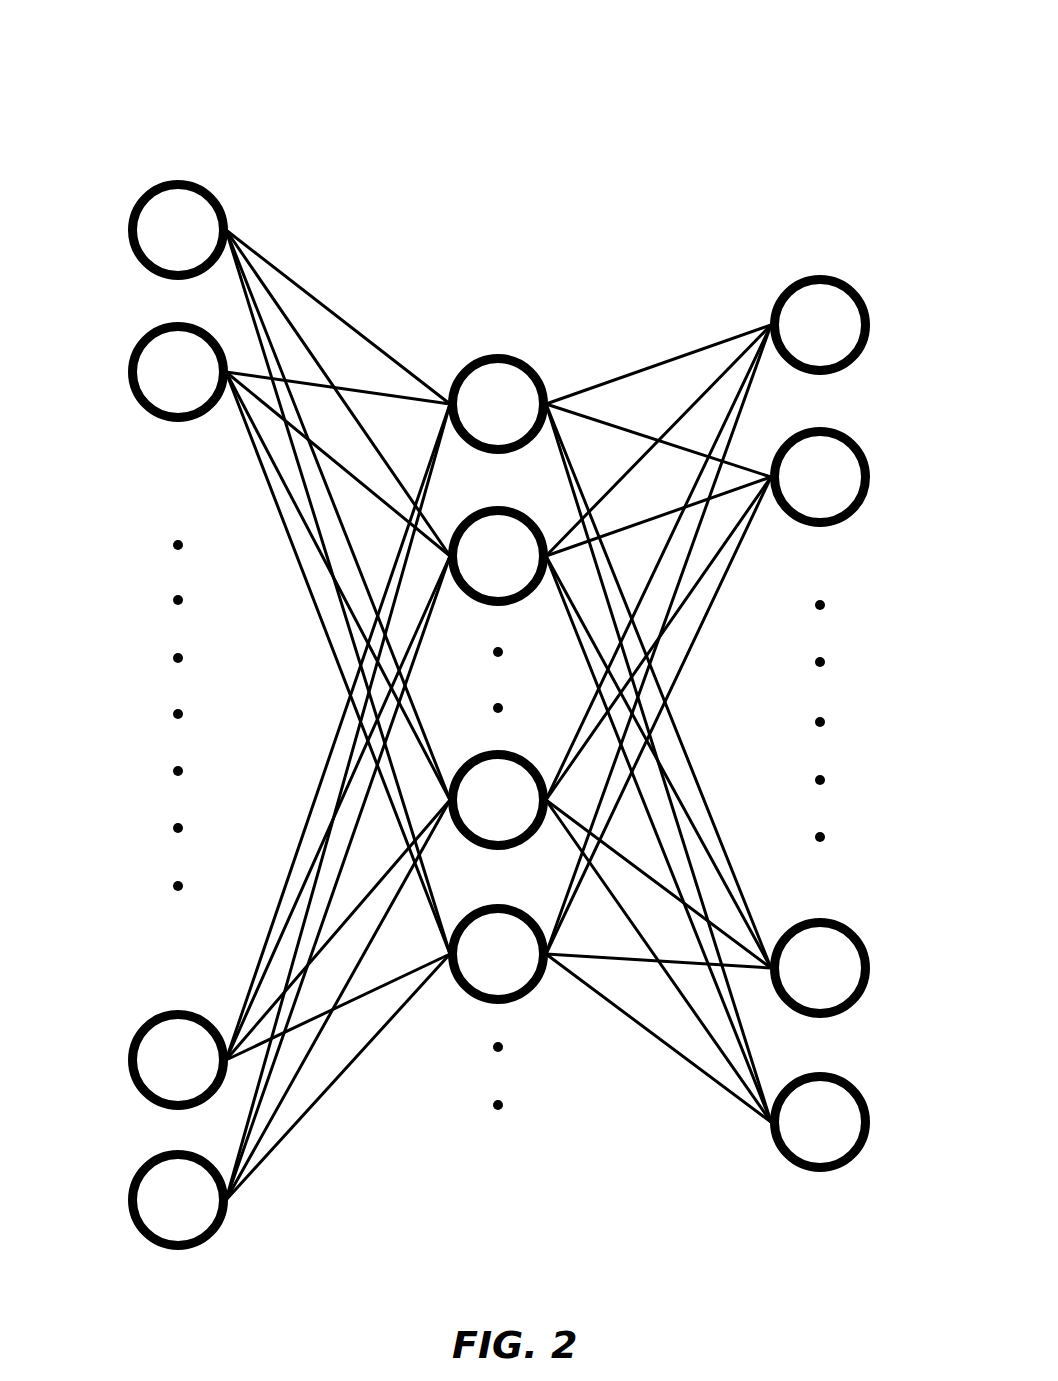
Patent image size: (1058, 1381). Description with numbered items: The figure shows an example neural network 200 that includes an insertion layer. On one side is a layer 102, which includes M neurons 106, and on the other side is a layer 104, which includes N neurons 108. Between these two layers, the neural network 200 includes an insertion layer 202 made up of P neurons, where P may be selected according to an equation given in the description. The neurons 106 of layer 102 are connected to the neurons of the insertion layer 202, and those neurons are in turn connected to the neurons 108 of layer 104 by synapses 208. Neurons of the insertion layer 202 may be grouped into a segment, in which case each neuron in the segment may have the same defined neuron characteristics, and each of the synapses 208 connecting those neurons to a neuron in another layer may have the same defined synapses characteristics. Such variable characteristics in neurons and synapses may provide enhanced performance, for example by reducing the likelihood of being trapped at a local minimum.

The neural network 200 is at (858, 70).
The layer 102 is at (183, 168).
The layer 104 is at (823, 260).
The neurons 106 is at (131, 217).
The neurons 108 is at (869, 312).
The insertion layer 202 is at (500, 1130).
The synapses 208 is at (283, 274).